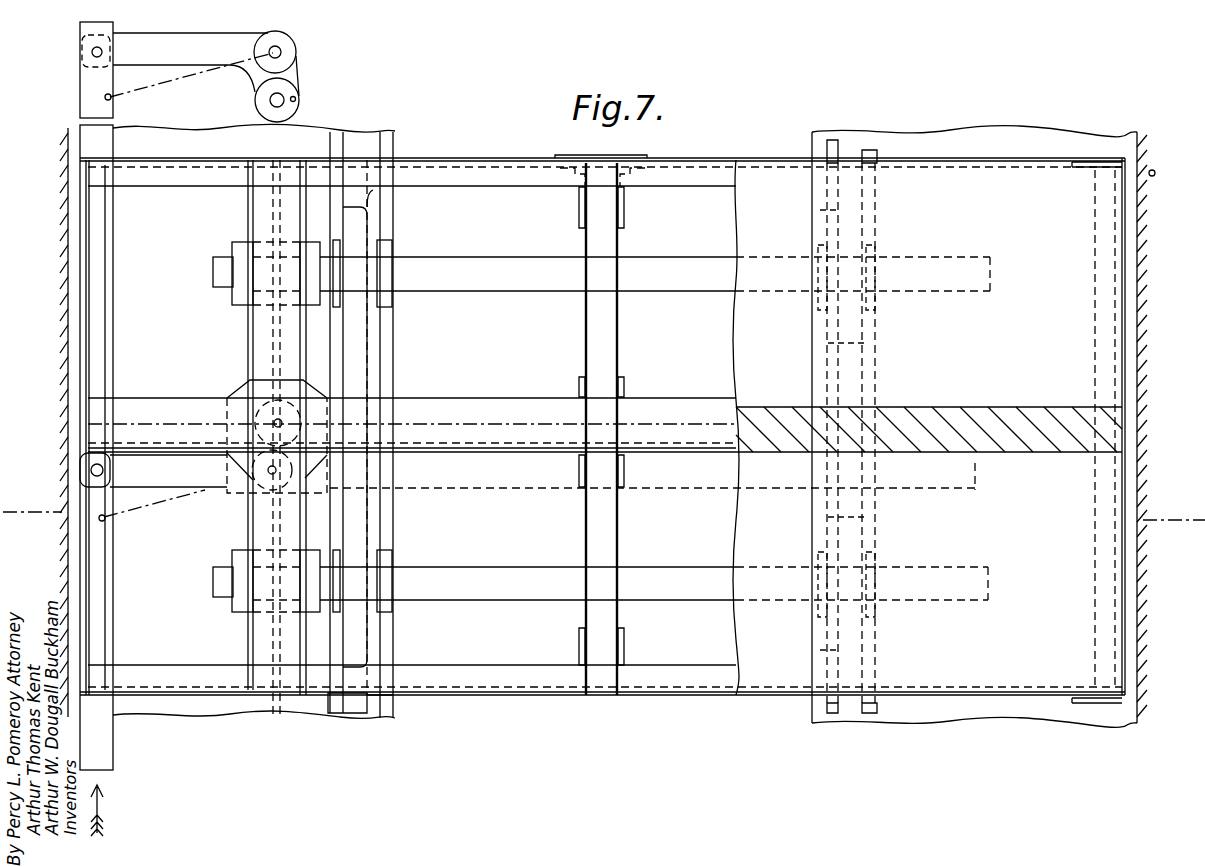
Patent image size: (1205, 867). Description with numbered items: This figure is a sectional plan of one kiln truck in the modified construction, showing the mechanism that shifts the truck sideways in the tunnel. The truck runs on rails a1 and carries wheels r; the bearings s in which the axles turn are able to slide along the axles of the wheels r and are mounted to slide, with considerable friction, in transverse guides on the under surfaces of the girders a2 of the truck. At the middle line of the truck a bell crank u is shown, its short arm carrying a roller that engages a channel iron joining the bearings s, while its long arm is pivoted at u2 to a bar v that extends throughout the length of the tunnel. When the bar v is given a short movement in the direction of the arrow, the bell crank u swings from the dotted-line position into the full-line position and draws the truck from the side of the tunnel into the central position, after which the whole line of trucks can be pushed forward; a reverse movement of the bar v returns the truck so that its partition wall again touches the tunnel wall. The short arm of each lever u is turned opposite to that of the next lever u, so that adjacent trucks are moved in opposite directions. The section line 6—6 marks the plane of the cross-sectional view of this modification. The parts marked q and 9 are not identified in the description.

The pivot u2 is at (88, 463).
The bell crank u is at (170, 527).
The bar v is at (118, 600).
The bearings s is at (247, 293).
The girders a2 is at (848, 705).
The rails a1 is at (380, 380).
The wheels r is at (380, 640).
The shaft q is at (670, 617).
The cross bar 9 is at (1000, 425).
The section line 6 is at (604, 503).